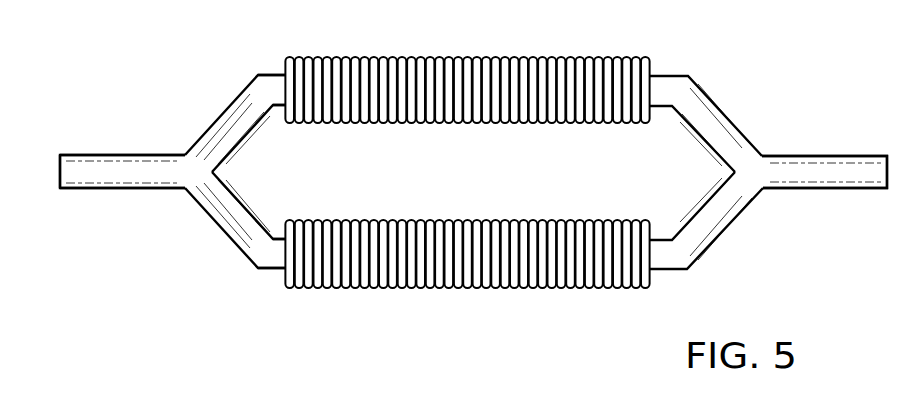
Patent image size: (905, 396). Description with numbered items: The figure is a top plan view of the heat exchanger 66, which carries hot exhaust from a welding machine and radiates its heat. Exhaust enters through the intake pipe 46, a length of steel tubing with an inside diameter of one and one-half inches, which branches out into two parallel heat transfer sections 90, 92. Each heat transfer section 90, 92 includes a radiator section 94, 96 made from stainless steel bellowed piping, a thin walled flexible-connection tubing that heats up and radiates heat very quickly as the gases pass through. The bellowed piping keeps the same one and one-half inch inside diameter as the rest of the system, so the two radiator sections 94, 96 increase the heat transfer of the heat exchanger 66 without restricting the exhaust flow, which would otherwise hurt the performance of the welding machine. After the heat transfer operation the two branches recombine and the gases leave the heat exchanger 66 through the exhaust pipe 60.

The heat exchanger 66 is at (168, 51).
The intake pipe 46 is at (105, 190).
The exhaust pipe 60 is at (808, 156).
The heat transfer section 90 is at (268, 75).
The heat transfer section 92 is at (268, 269).
The radiator section 94 is at (508, 57).
The radiator section 96 is at (508, 288).